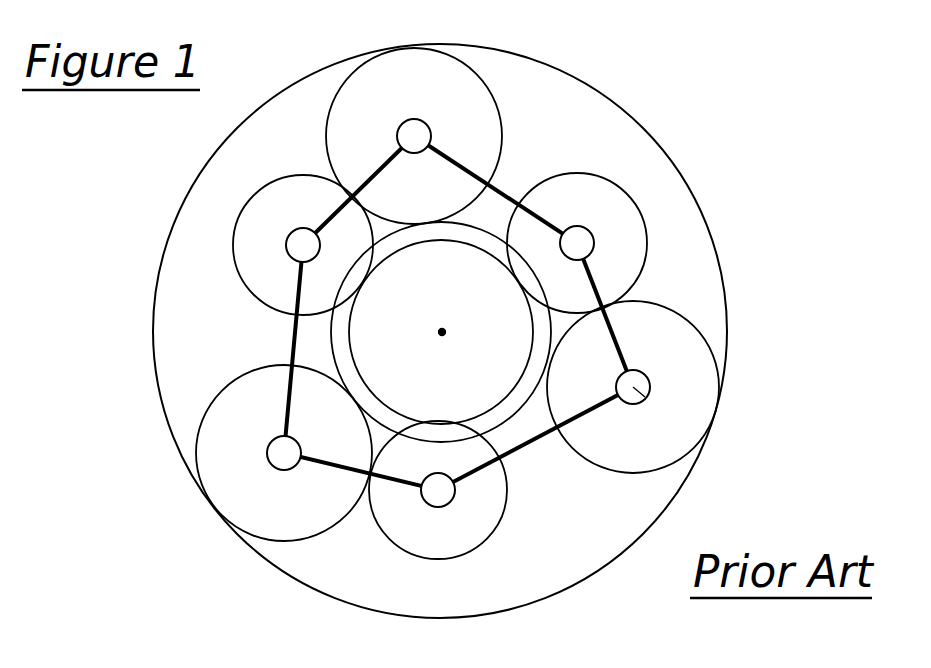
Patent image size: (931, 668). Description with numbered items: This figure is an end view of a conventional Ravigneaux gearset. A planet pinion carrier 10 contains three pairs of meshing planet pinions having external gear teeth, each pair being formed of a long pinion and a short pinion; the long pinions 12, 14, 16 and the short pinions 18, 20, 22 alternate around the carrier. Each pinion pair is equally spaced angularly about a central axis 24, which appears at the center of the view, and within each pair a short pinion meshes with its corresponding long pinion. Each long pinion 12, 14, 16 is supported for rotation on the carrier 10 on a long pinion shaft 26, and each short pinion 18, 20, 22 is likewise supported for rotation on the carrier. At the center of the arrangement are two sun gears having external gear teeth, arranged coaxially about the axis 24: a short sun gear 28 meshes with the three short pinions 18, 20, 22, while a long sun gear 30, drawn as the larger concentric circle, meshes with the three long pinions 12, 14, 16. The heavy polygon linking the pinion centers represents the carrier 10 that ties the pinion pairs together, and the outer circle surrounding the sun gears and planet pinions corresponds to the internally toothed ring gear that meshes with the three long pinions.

The planet pinion carrier 10 is at (540, 440).
The long pinion 12 is at (464, 107).
The long pinion 14 is at (690, 358).
The long pinion 16 is at (250, 432).
The short pinion 18 is at (625, 227).
The short pinion 20 is at (456, 542).
The short pinion 22 is at (282, 234).
The central axis 24 is at (438, 333).
The long pinion shaft 26 is at (709, 428).
The short sun gear 28 is at (395, 408).
The long sun gear 30 is at (497, 237).